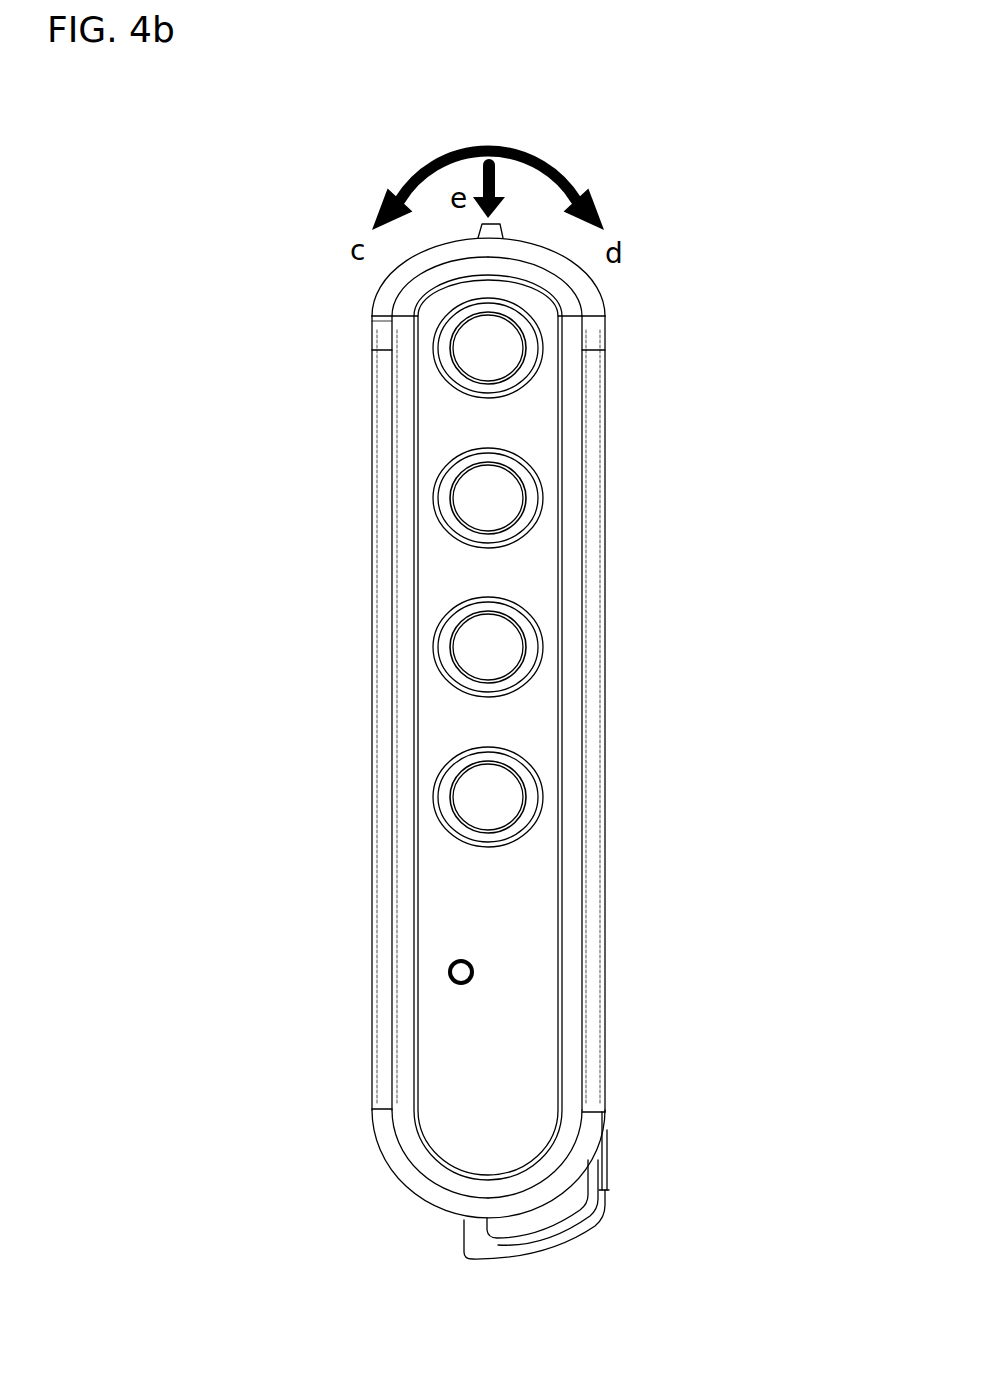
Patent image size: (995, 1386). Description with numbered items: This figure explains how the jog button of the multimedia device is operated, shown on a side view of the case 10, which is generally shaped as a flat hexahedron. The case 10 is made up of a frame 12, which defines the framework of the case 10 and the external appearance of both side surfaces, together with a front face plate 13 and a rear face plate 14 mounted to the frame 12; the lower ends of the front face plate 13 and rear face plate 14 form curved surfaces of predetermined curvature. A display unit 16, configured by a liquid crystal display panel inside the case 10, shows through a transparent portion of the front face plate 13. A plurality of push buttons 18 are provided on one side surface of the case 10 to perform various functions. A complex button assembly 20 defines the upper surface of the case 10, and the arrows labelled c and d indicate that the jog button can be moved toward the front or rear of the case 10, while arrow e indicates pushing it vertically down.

The case 10 is at (340, 775).
The frame 12 is at (475, 1138).
The front face plate 13 is at (372, 1023).
The rear face plate 14 is at (582, 960).
The display unit 16 is at (373, 508).
The push buttons 18 is at (494, 349).
The complex button assembly 20 is at (628, 287).